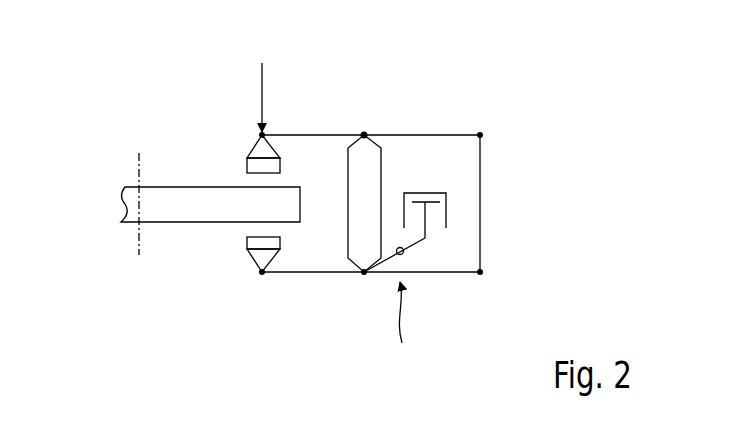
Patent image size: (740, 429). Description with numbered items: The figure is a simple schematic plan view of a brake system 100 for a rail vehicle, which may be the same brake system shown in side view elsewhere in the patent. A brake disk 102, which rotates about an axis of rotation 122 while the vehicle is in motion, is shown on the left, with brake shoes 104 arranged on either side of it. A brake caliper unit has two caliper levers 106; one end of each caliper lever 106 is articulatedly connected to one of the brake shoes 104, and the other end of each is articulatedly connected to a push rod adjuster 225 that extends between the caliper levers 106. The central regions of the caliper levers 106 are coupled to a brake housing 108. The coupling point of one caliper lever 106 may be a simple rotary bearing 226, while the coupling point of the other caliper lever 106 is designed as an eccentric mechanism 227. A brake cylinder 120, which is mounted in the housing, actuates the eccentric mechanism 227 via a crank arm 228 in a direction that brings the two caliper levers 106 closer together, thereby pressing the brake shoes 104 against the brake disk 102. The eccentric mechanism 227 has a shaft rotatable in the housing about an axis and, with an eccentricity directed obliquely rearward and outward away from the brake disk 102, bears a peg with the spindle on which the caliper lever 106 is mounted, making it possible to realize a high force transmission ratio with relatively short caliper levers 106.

The brake system 100 is at (236, 103).
The brake disk 102 is at (132, 200).
The brake shoes 104 is at (248, 163).
The caliper levers 106 is at (313, 135).
The brake housing 108 is at (376, 178).
The brake cylinder 120 is at (446, 205).
The axis of rotation 122 is at (138, 238).
The push rod adjuster 225 is at (480, 158).
The rotary bearing 226 is at (364, 135).
The eccentric mechanism 227 is at (406, 327).
The crank arm 228 is at (412, 245).